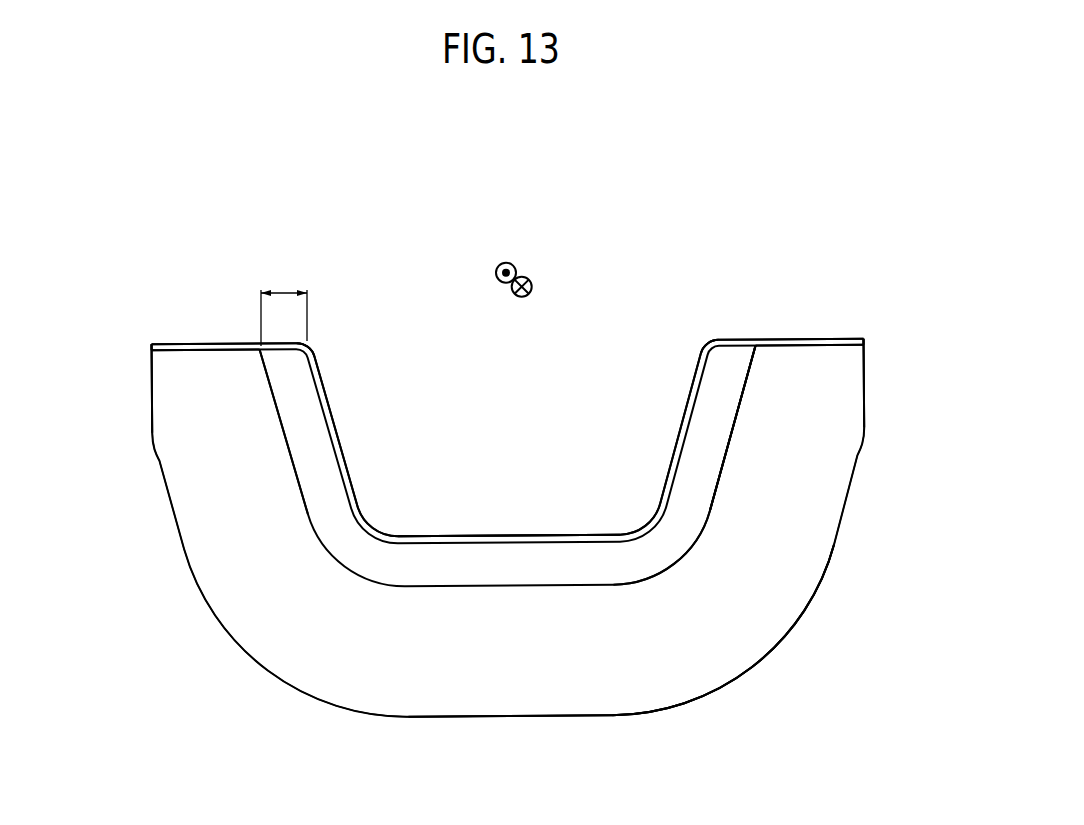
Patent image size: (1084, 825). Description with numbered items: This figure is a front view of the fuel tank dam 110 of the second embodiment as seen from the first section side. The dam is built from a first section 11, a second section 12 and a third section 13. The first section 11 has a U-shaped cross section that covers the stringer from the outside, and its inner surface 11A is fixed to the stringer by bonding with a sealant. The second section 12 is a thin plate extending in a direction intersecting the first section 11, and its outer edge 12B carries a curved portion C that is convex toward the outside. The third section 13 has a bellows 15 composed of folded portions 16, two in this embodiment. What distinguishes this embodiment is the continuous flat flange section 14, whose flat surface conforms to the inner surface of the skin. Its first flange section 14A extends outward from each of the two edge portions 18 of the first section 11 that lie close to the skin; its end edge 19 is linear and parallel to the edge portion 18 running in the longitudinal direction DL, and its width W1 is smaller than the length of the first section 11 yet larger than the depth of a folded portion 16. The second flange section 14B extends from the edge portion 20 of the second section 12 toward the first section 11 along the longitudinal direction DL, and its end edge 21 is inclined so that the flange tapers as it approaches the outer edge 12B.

The fuel tank dam 110 is at (829, 217).
The first section 11 is at (563, 547).
The inner surface 11A is at (437, 538).
The second section 12 is at (823, 522).
The outer edge 12B is at (803, 620).
The third section 13 is at (690, 555).
The flange section 14 is at (509, 442).
The first flange section 14A is at (282, 340).
The second flange section 14B is at (175, 342).
The bellows 15 is at (760, 428).
The folded portion 16 is at (727, 433).
The edge portion 18 is at (315, 353).
The end edge 19 is at (262, 347).
The edge portion 20 is at (160, 359).
The end edge 21 is at (193, 348).
The width W1 is at (283, 290).
The longitudinal direction DL is at (508, 263).
The curved portion C is at (730, 683).